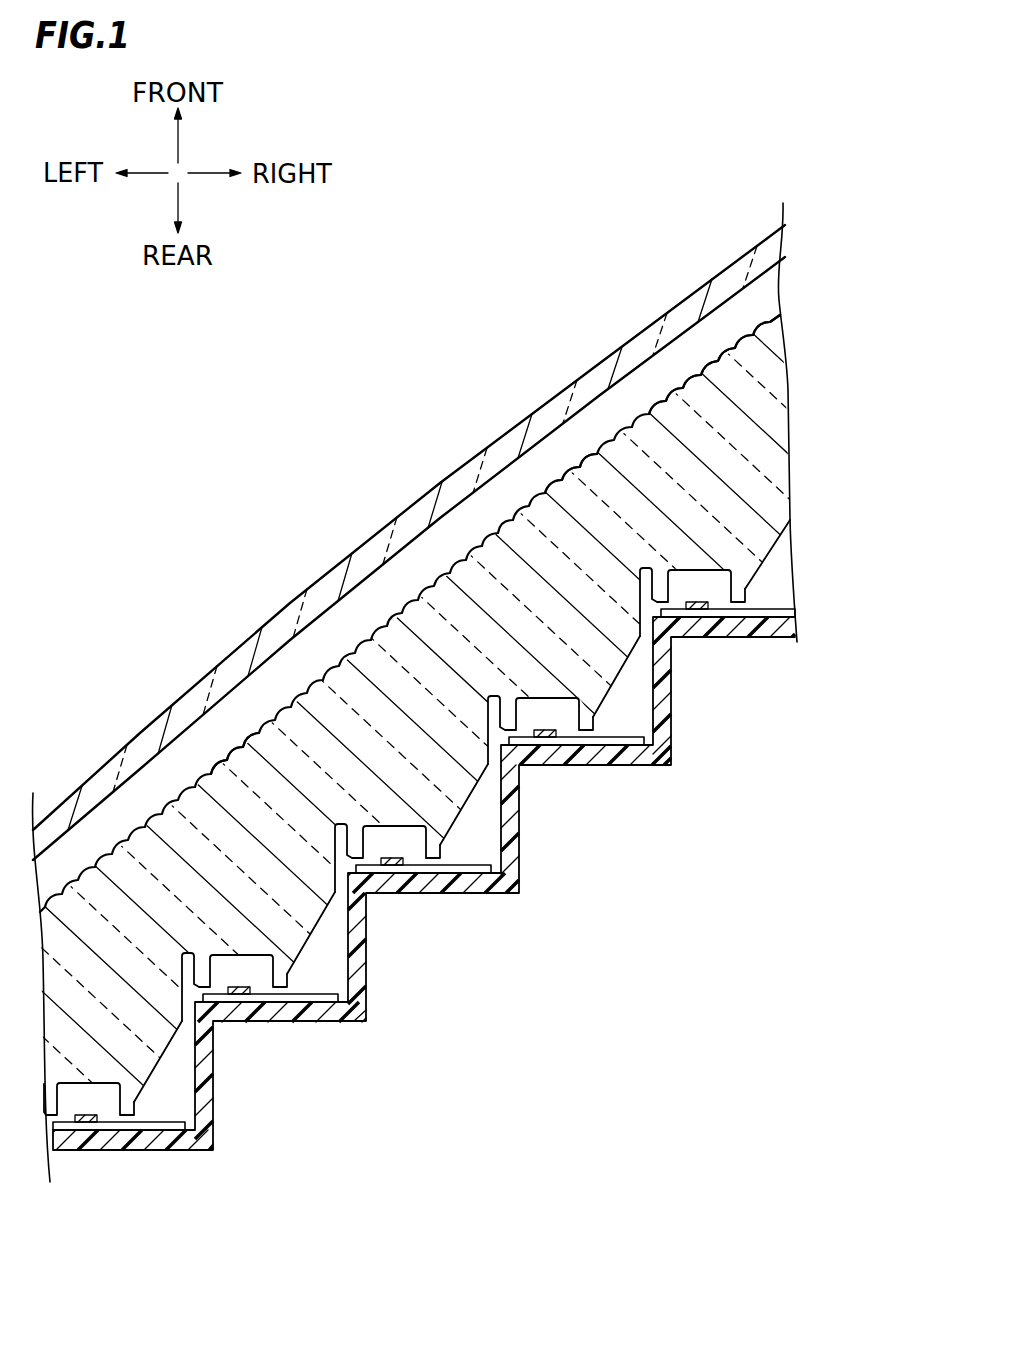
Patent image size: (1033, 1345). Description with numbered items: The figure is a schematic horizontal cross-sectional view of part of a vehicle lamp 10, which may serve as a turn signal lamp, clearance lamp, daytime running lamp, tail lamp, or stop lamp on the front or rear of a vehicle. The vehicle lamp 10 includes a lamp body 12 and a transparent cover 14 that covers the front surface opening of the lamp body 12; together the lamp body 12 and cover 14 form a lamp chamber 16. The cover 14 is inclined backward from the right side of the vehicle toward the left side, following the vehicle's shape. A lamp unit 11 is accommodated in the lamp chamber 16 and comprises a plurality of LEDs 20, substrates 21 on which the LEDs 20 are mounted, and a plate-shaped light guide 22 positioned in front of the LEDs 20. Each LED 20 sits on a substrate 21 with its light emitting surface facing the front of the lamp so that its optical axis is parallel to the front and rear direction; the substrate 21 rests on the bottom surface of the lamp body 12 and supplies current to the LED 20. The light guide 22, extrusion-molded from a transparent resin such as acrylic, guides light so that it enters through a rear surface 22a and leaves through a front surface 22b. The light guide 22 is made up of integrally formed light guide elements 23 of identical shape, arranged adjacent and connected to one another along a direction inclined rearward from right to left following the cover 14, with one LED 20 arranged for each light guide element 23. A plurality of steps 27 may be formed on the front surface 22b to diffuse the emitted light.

The vehicle lamp 10 is at (505, 318).
The lamp unit 11 is at (710, 358).
The lamp body 12 is at (492, 896).
The cover 14 is at (322, 578).
The lamp chamber 16 is at (86, 867).
The LED 20 is at (393, 903).
The substrate 21 is at (424, 903).
The light guide 22 is at (770, 407).
The rear surface 22a is at (108, 1105).
The front surface 22b is at (463, 542).
The light guide element 23 is at (772, 567).
The step 27 is at (570, 472).